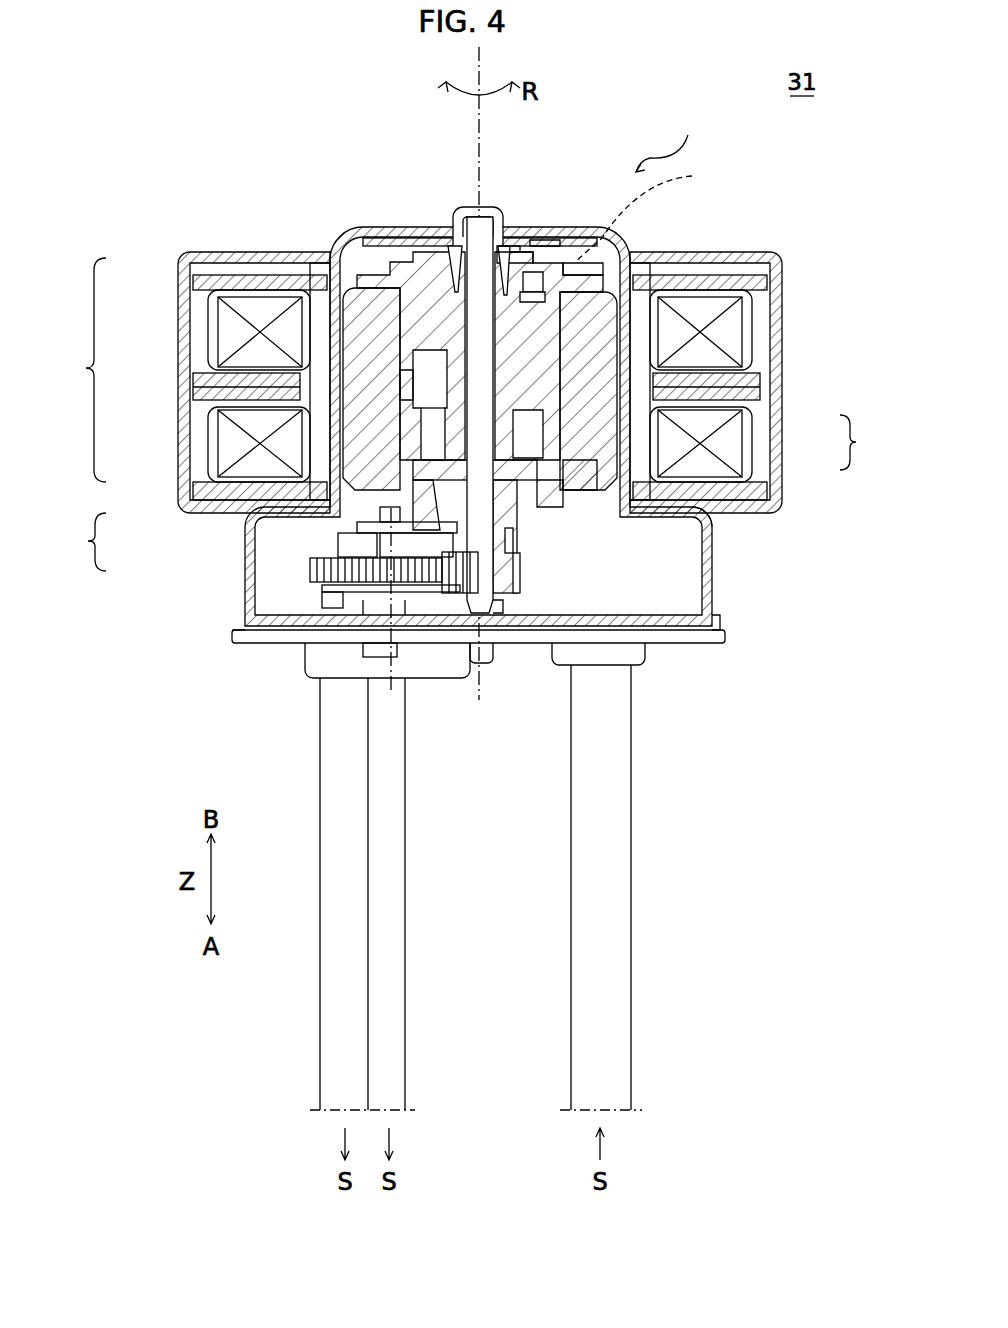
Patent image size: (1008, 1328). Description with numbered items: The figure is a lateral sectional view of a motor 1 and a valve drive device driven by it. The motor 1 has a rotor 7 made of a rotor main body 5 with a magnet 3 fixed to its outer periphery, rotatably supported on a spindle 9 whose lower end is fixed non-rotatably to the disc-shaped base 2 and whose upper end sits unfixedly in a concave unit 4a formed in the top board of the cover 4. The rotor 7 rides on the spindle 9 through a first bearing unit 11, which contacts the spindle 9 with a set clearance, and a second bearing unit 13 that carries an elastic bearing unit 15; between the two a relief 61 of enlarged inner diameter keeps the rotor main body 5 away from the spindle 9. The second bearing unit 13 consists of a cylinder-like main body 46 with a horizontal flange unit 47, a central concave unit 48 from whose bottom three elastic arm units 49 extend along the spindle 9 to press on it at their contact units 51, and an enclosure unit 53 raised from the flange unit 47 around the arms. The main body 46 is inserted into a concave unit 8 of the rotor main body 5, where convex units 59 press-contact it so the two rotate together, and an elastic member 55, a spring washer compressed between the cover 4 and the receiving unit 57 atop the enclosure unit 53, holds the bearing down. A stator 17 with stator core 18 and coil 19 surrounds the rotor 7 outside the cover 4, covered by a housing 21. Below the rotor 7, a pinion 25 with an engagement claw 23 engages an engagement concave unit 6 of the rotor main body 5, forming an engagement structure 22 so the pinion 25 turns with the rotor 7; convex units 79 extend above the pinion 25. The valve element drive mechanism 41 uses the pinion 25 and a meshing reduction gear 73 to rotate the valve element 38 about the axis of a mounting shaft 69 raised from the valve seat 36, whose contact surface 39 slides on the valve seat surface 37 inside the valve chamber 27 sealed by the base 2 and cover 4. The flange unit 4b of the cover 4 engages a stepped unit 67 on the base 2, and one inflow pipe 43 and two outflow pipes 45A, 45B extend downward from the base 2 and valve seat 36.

The motor 1 is at (666, 138).
The base 2 is at (685, 650).
The magnet 3 is at (590, 445).
The cover 4 is at (541, 381).
The concave unit 4a is at (478, 212).
The flange unit 4b is at (725, 625).
The rotor main body 5 is at (612, 430).
The engagement concave unit 6 is at (420, 390).
The rotor 7 is at (858, 442).
The concave unit 8 is at (525, 295).
The spindle 9 is at (485, 340).
The first bearing unit 11 is at (497, 448).
The second bearing unit 13 is at (548, 255).
The elastic bearing unit 15 is at (455, 270).
The stator 17 is at (78, 370).
The stator core 18 is at (200, 283).
The coil 19 is at (230, 330).
The housing 21 is at (785, 278).
The engagement structure 22 is at (79, 542).
The engagement claw 23 is at (430, 427).
The pinion 25 is at (522, 575).
The valve chamber 27 is at (697, 520).
The valve seat 36 is at (303, 655).
The valve seat surface 37 is at (337, 608).
The valve element 38 is at (418, 600).
The contact surface 39 is at (363, 615).
The valve element drive mechanism 41 is at (503, 605).
The inflow pipe 43 is at (631, 892).
The outflow pipe 45A is at (405, 960).
The outflow pipe 45B is at (320, 1020).
The main body 46 is at (438, 302).
The flange unit 47 is at (420, 263).
The concave unit 48 is at (497, 307).
The elastic arm unit 49 is at (452, 214).
The contact unit 51 is at (500, 243).
The enclosure unit 53 is at (540, 240).
The elastic member 55 is at (390, 246).
The receiving unit 57 is at (458, 255).
The convex unit 59 is at (651, 212).
The relief 61 is at (540, 385).
The stepped unit 67 is at (240, 622).
The mounting shaft 69 is at (392, 512).
The reduction gear 73 is at (312, 566).
The convex unit 79 is at (507, 540).